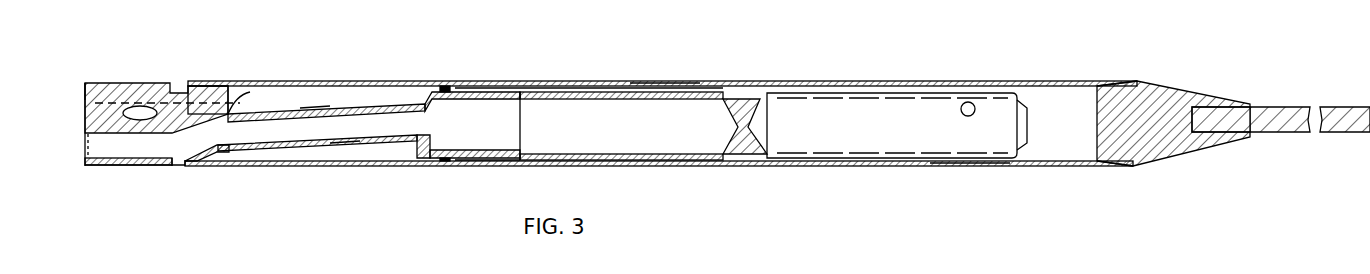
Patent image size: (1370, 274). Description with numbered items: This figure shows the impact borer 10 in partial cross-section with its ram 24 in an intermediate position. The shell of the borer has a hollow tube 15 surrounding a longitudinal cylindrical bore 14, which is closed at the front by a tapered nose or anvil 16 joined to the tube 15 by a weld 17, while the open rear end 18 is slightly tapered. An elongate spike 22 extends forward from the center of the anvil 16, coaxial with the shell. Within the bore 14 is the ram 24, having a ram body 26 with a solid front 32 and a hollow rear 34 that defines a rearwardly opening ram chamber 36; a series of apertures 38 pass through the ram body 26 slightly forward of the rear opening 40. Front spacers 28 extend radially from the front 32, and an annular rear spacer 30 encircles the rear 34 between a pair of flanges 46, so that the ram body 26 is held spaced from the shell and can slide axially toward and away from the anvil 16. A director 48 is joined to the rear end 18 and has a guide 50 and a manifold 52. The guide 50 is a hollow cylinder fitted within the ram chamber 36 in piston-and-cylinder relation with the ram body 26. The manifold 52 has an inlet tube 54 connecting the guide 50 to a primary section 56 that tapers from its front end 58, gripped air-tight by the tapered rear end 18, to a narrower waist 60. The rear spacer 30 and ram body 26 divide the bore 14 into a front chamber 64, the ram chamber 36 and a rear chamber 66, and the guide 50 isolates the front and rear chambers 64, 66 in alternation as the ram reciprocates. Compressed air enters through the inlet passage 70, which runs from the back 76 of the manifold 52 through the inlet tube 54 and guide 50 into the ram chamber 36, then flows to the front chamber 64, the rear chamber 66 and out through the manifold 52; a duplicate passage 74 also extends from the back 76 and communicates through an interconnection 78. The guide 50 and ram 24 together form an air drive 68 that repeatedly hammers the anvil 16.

The impact borer 10 is at (769, 40).
The longitudinal cylindrical bore 14 is at (272, 92).
The tube 15 is at (651, 81).
The anvil 16 is at (1180, 90).
The weld 17 is at (1136, 82).
The rear end 18 is at (189, 86).
The spike 22 is at (1296, 106).
The ram 24 is at (838, 92).
The ram body 26 is at (556, 92).
The front spacers 28 is at (965, 102).
The rear spacer 30 is at (445, 86).
The solid front 32 is at (965, 166).
The hollow rear 34 is at (605, 163).
The ram chamber 36 is at (618, 140).
The apertures 38 is at (520, 92).
The rear opening 40 is at (428, 96).
The flanges 46 is at (466, 90).
The director 48 is at (155, 166).
The guide 50 is at (420, 143).
The manifold 52 is at (112, 88).
The inlet tube 54 is at (300, 150).
The primary section 56 is at (230, 110).
The front end 58 is at (219, 153).
The waist 60 is at (176, 162).
The front chamber 64 is at (1045, 134).
The rear chamber 66 is at (302, 100).
The air drive 68 is at (600, 80).
The inlet passage 70 is at (140, 147).
The duplicate passage 74 is at (87, 83).
The back 76 is at (87, 130).
The interconnection 78 is at (142, 108).